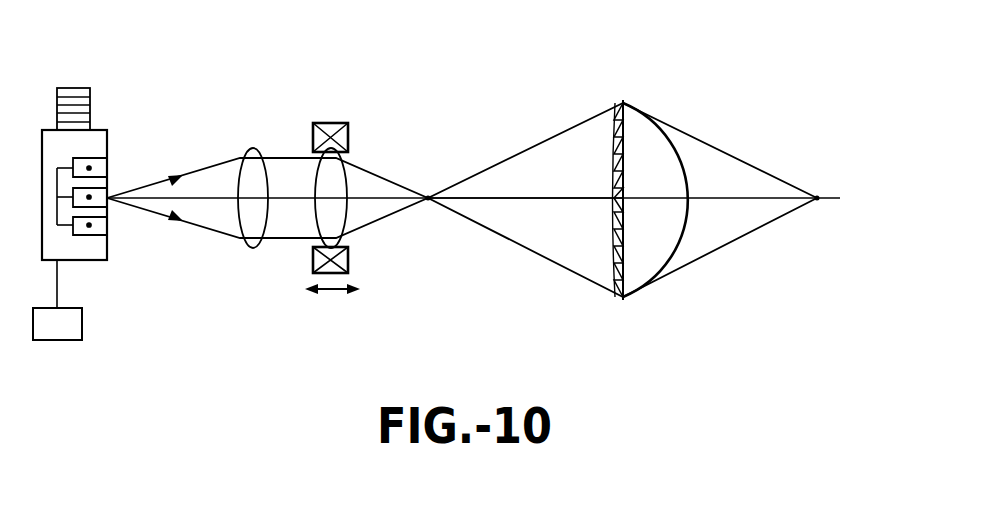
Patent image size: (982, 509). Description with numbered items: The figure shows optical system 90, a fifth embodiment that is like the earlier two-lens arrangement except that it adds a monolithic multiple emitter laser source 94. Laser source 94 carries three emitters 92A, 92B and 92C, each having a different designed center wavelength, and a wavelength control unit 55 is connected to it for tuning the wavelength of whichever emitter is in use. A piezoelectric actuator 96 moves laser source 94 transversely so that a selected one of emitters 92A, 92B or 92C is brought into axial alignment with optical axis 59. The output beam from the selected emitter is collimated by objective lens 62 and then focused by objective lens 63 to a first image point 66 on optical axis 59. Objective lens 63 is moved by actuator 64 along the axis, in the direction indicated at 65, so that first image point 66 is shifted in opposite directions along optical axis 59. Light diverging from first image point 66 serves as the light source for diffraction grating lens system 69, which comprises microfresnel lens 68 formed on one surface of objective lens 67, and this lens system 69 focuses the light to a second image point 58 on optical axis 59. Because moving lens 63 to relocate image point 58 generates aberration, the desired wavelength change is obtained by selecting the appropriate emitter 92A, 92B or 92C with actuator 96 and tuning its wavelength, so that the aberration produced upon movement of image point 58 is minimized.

The optical system 90 is at (578, 41).
The multiple emitter laser source 94 is at (96, 140).
The piezoelectric actuator 96 is at (75, 88).
The laser emitter 92A is at (103, 200).
The laser emitter 92B is at (100, 228).
The laser emitter 92C is at (102, 158).
The wavelength control unit 55 is at (57, 300).
The objective lens 62 is at (260, 148).
The objective lens 63 is at (343, 168).
The actuator 64 is at (313, 257).
The lens axial movement direction 65 is at (330, 290).
The first image point 66 is at (428, 198).
The optical axis 59 is at (527, 200).
The microfresnel lens 68 is at (622, 105).
The objective lens 67 is at (640, 110).
The diffraction grating lens system 69 is at (670, 172).
The second image point 58 is at (818, 198).